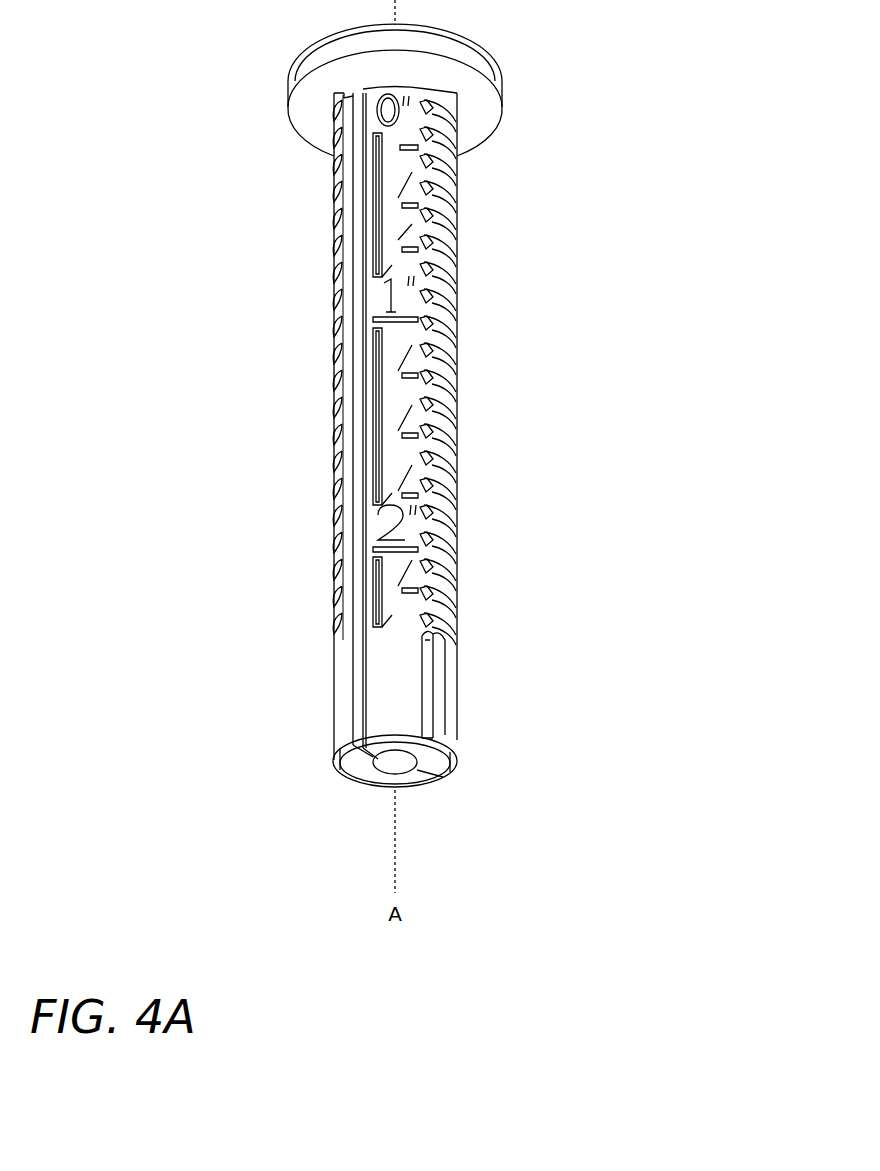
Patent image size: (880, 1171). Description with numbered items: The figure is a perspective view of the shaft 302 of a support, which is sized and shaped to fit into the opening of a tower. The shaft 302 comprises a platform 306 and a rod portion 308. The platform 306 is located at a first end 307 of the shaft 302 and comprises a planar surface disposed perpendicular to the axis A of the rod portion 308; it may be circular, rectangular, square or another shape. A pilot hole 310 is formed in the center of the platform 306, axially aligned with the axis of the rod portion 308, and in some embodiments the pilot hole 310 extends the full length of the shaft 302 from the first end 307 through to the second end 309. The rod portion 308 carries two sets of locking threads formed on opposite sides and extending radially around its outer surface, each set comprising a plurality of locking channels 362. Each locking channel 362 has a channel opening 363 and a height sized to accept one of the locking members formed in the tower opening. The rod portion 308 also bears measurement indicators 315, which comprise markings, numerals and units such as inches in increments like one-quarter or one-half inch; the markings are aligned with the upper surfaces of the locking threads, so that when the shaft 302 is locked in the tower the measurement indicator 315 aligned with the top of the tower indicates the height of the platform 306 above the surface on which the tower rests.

The shaft 302 is at (585, 245).
The platform 306 is at (487, 53).
The first end 307 is at (242, 112).
The rod portion 308 is at (400, 687).
The second end 309 is at (260, 775).
The pilot hole 310 is at (405, 767).
The measurement indicators 315 is at (370, 528).
The locking channels 362 is at (440, 397).
The channel opening 363 is at (407, 587).